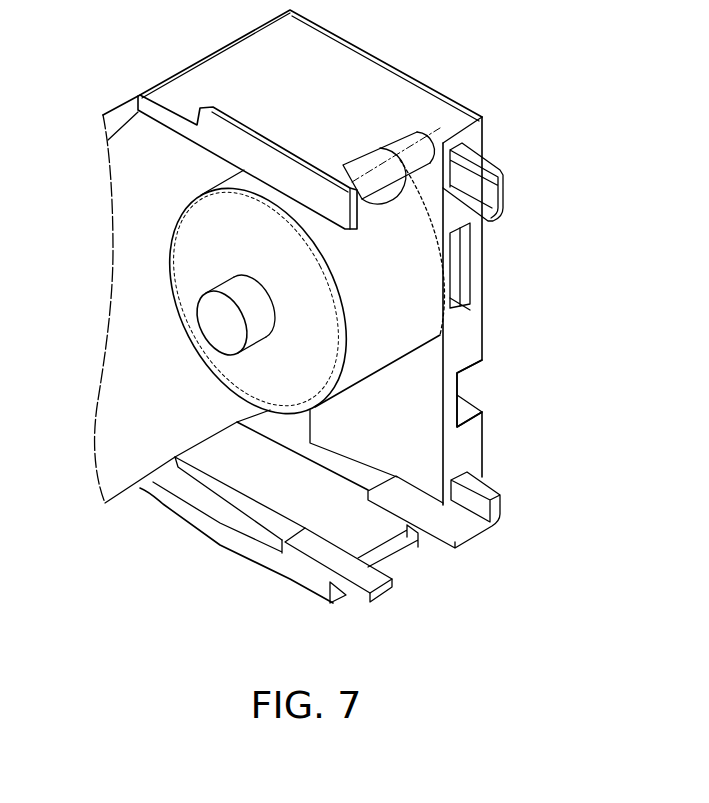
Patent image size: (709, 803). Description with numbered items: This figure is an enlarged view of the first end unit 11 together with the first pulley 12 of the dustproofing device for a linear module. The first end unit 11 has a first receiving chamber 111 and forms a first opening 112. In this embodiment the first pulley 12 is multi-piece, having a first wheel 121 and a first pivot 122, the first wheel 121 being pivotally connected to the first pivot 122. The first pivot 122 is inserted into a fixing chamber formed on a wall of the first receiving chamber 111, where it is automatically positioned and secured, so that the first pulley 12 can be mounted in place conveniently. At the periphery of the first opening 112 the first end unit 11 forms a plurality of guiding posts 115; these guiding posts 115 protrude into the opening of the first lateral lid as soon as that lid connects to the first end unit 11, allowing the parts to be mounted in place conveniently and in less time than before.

The first end unit 11 is at (365, 75).
The first receiving chamber 111 is at (351, 357).
The first opening 112 is at (443, 395).
The guiding posts 115 is at (498, 163).
The first pulley 12 is at (406, 301).
The first wheel 121 is at (417, 263).
The first pivot 122 is at (257, 318).